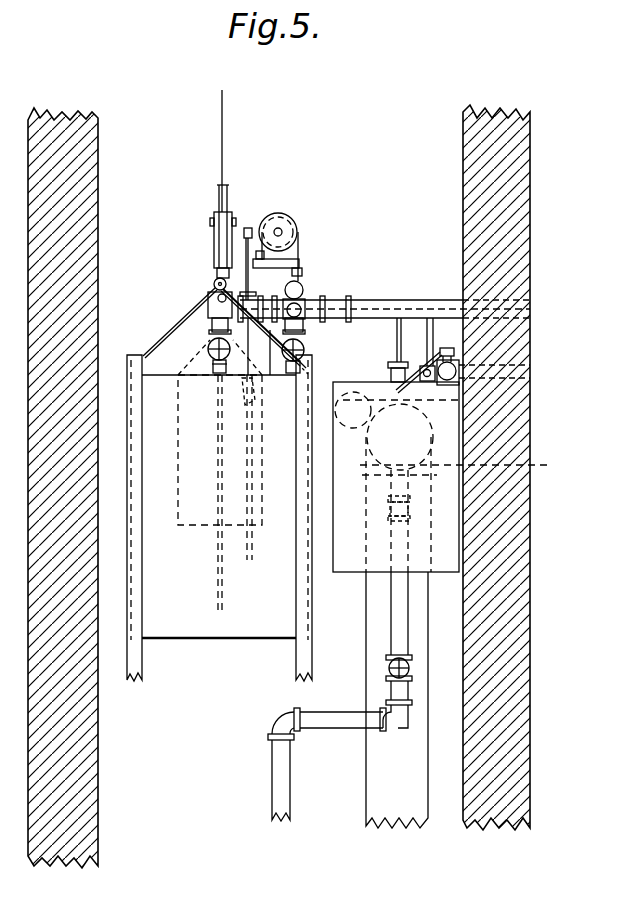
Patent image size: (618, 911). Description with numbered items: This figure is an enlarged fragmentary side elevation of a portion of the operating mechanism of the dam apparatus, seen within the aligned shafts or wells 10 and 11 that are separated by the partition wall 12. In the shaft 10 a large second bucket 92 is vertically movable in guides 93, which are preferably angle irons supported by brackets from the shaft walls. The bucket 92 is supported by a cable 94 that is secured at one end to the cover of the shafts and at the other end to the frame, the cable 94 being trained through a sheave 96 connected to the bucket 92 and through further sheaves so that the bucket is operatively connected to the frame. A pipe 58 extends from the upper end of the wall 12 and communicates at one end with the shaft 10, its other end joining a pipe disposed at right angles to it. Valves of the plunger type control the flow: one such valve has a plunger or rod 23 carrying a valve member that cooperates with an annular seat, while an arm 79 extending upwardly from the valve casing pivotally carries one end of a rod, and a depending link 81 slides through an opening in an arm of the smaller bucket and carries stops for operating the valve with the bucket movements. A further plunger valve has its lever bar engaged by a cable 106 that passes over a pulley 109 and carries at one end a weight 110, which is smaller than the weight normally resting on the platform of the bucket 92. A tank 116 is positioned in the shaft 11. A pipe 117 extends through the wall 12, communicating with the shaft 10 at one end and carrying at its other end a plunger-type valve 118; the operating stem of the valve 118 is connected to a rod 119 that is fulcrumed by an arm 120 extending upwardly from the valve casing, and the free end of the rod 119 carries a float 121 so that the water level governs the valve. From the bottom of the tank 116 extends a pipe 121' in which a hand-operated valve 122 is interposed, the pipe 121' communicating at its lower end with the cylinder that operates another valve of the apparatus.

The shaft or well 10 is at (579, 505).
The shaft or well 11 is at (183, 800).
The partition wall 12 is at (522, 586).
The plunger or rod 23 is at (390, 345).
The pipe 58 is at (372, 300).
The arm 79 is at (430, 325).
The link 81 is at (214, 282).
The second bucket 92 is at (238, 571).
The guides 93 is at (296, 662).
The cable 94 is at (222, 135).
The sheave 96 is at (224, 198).
The cable 106 is at (297, 246).
The pulley 109 is at (283, 222).
The weight 110 is at (300, 288).
The tank 116 is at (441, 477).
The pipe 117 is at (518, 368).
The valve 118 is at (456, 373).
The rod 119 is at (412, 393).
The arm 120 is at (432, 380).
The float 121 is at (345, 424).
The pipe 121' is at (340, 751).
The hand-operated valve 122 is at (388, 668).